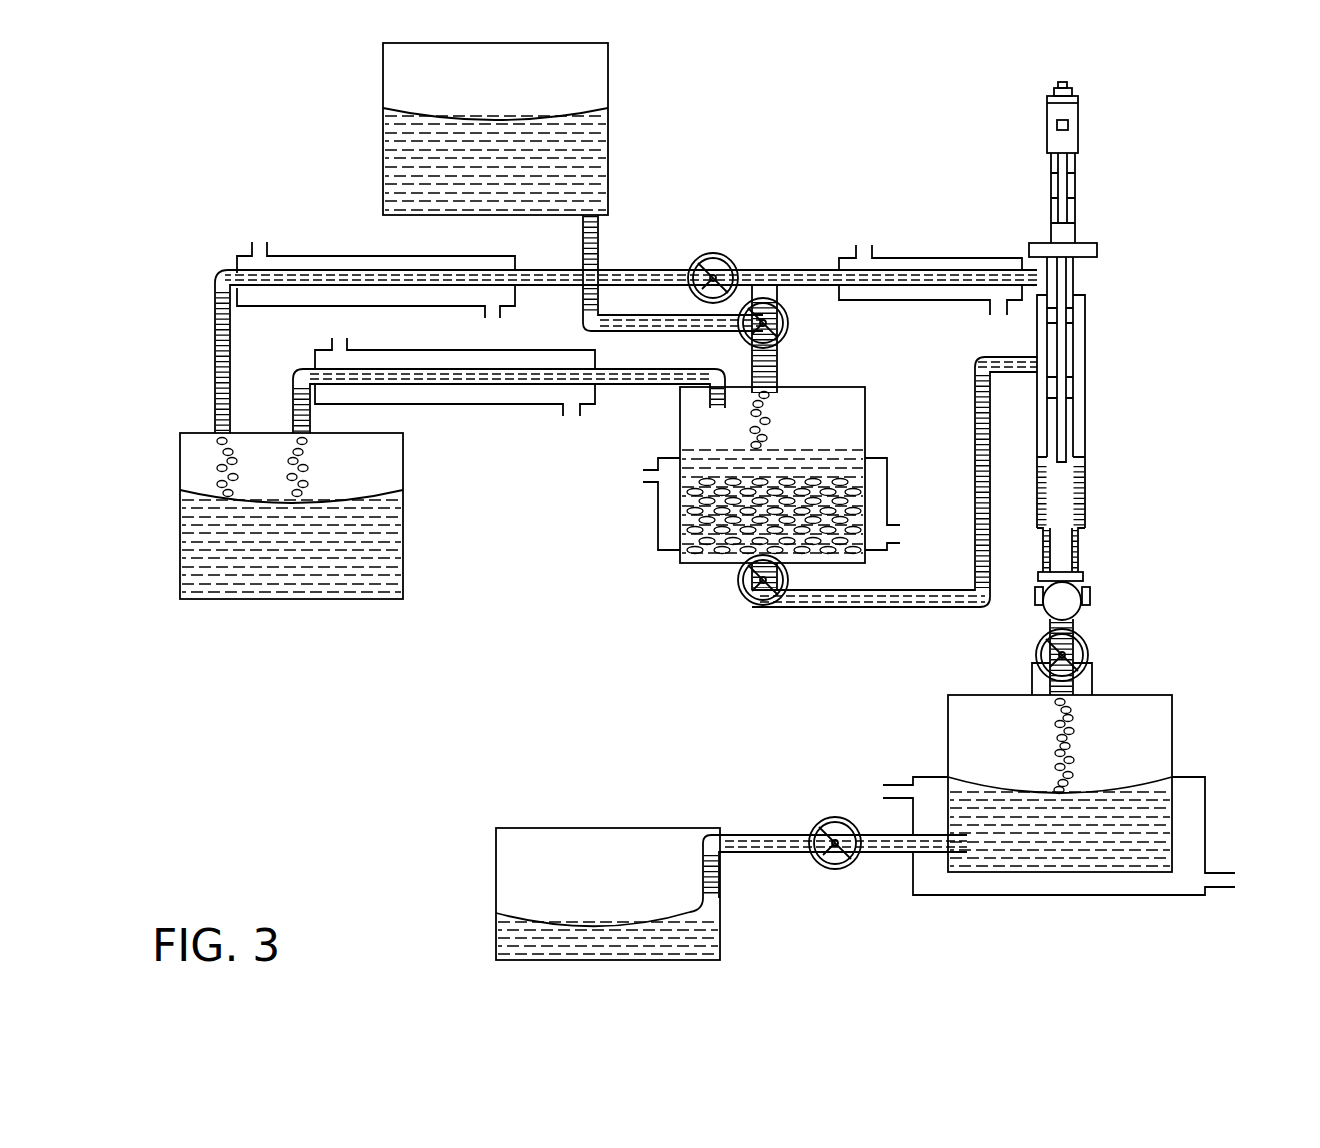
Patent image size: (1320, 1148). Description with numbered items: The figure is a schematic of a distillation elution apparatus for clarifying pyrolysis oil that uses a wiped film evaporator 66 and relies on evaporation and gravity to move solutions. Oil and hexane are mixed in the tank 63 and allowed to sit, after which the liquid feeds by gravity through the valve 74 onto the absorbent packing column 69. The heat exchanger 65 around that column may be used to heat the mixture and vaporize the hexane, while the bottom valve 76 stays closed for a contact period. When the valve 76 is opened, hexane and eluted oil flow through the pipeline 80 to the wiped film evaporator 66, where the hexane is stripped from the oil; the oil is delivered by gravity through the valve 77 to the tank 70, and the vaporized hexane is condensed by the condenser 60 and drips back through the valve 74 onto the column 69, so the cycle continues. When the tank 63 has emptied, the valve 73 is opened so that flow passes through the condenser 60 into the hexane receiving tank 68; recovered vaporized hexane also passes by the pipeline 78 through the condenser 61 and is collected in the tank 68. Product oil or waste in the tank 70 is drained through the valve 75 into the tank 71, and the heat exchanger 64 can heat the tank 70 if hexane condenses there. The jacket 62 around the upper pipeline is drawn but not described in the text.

The condenser 60 is at (953, 258).
The condenser 61 is at (478, 403).
The heat exchanger jacket 62 is at (322, 256).
The tank 63 is at (608, 85).
The heat exchanger 64 is at (1205, 800).
The heat exchanger 65 is at (658, 528).
The wiped film evaporator 66 is at (1087, 335).
The hexane receiving tank 68 is at (403, 532).
The absorbent packing column 69 is at (712, 450).
The tank 70 is at (1172, 745).
The tank 71 is at (595, 828).
The valve 73 is at (690, 266).
The valve 74 is at (790, 325).
The valve 75 is at (812, 830).
The bottom valve 76 is at (215, 333).
The valve 77 is at (1035, 655).
The pipeline 78 is at (293, 410).
The pipeline 80 is at (868, 607).